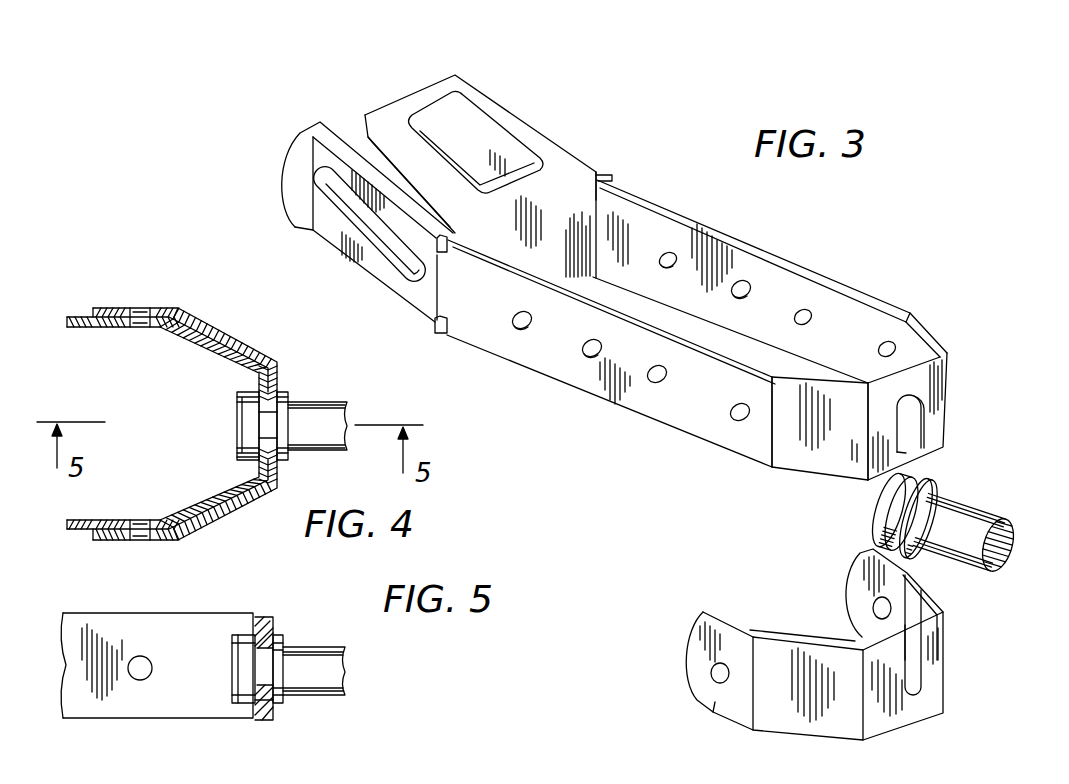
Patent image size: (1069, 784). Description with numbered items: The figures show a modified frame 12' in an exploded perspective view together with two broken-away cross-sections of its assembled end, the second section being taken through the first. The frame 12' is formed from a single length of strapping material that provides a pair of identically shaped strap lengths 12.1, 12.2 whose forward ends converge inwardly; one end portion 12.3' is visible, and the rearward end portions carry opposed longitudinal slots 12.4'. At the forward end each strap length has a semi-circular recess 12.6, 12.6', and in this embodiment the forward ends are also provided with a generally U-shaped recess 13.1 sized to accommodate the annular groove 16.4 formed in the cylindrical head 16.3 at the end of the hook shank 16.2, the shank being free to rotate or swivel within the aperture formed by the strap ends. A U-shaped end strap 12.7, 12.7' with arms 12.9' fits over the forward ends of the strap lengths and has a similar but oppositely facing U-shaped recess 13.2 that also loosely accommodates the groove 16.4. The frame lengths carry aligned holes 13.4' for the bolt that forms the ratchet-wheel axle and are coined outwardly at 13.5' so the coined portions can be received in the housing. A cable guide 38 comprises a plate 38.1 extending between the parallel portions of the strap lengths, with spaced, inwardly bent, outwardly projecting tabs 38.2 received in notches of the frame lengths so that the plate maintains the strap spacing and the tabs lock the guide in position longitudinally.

In FIG. 3, the frame 12' is at (692, 330).
In FIG. 4, the strap length 12.1 is at (63, 327).
In FIG. 5, the strap length 12.1 is at (105, 613).
In FIG. 4, the strap length 12.2 is at (95, 518).
In FIG. 3, the end portion 12.3' is at (333, 222).
In FIG. 3, the longitudinal slot 12.4' is at (354, 227).
In FIG. 5, the semi-circular recess 12.6 is at (243, 651).
In FIG. 3, the semi-circular recess 12.6' is at (890, 446).
In FIG. 4, the end strap 12.7 is at (242, 453).
In FIG. 5, the end strap 12.7 is at (291, 728).
In FIG. 3, the end strap 12.7' is at (846, 696).
In FIG. 3, the arm 12.9' is at (814, 658).
In FIG. 3, the U-shaped recess 13.1 is at (907, 453).
In FIG. 3, the U-shaped recess 13.2 is at (912, 685).
In FIG. 3, the hole 13.4' is at (725, 322).
In FIG. 3, the coined-out portion 13.5' is at (642, 289).
In FIG. 3, the shank 16.2 is at (968, 532).
In FIG. 4, the shank 16.2 is at (330, 425).
In FIG. 5, the shank 16.2 is at (322, 666).
In FIG. 3, the cylindrical head 16.3 is at (880, 512).
In FIG. 4, the cylindrical head 16.3 is at (247, 423).
In FIG. 5, the cylindrical head 16.3 is at (238, 670).
In FIG. 3, the annular groove 16.4 is at (928, 476).
In FIG. 4, the annular groove 16.4 is at (268, 428).
In FIG. 5, the annular groove 16.4 is at (272, 645).
In FIG. 3, the cable guide 38 is at (528, 100).
In FIG. 3, the plate 38.1 is at (597, 176).
In FIG. 3, the tab 38.2 is at (603, 173).